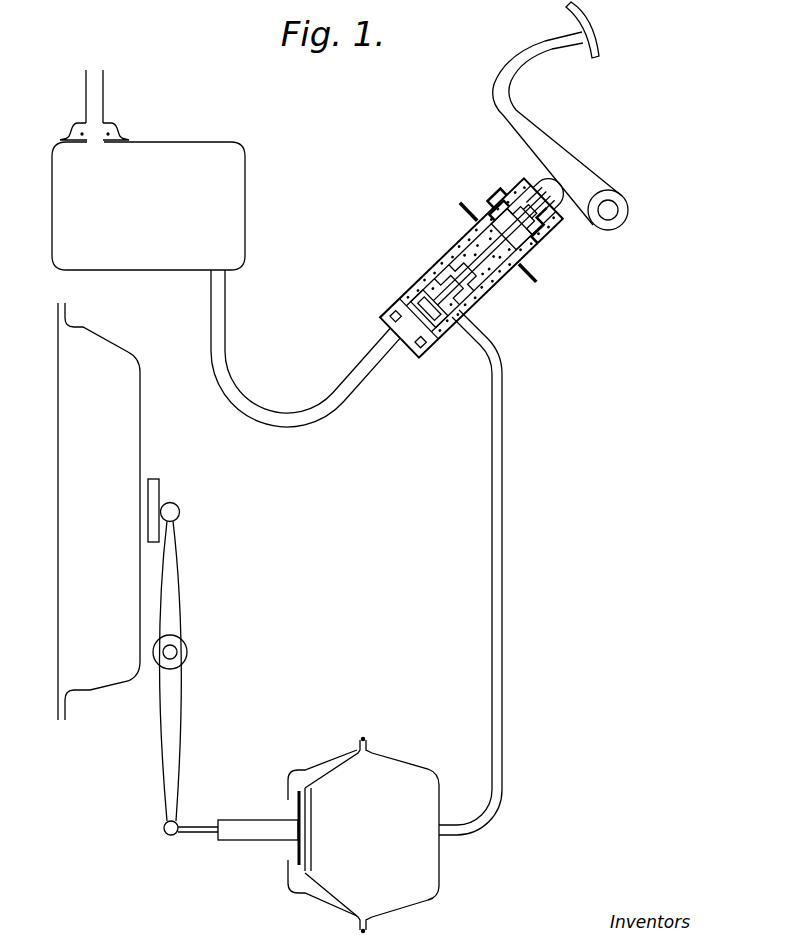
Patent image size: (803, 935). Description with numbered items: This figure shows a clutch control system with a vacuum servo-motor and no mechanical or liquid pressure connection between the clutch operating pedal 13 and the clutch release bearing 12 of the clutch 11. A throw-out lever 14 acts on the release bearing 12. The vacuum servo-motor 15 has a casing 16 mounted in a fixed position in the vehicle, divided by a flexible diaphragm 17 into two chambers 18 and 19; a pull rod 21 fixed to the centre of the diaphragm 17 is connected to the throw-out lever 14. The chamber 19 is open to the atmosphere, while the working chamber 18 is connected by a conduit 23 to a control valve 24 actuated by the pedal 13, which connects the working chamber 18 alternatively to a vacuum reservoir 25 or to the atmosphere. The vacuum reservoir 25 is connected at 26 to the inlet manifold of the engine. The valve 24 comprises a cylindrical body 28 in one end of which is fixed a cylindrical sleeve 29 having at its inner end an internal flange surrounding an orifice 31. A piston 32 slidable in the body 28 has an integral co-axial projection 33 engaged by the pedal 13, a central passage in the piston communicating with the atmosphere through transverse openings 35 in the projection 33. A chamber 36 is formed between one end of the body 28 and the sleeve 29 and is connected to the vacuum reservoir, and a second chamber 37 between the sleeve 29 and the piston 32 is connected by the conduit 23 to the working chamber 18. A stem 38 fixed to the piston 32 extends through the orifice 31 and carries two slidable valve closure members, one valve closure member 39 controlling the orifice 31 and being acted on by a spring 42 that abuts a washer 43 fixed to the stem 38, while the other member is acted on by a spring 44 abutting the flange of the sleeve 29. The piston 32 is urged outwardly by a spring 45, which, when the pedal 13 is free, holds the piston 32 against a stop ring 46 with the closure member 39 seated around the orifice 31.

The clutch 11 is at (99, 511).
The clutch release bearing 12 is at (165, 499).
The clutch operating pedal 13 is at (531, 49).
The throw-out lever 14 is at (181, 696).
The vacuum servo-motor 15 is at (339, 824).
The casing 16 is at (410, 762).
The flexible diaphragm 17 is at (323, 893).
The working chamber 18 is at (287, 829).
The chamber 19 is at (315, 768).
The pull rod 21 is at (534, 254).
The conduit 23 is at (491, 528).
The control valve 24 is at (121, 130).
The vacuum reservoir 25 is at (148, 206).
The connection to inlet manifold 26 is at (98, 83).
The cylindrical body 28 is at (484, 298).
The cylindrical sleeve 29 is at (440, 270).
The orifice 31 is at (510, 283).
The piston 32 is at (498, 200).
The co-axial projection 33 is at (546, 183).
The transverse openings 35 is at (524, 188).
The chamber 36 is at (390, 326).
The second chamber 37 is at (466, 222).
The stem 38 is at (453, 253).
The valve closure member 39 is at (447, 327).
The spring 42 is at (410, 288).
The washer 43 is at (408, 348).
The spring 44 is at (458, 244).
The spring 45 is at (478, 312).
The stop ring 46 is at (569, 183).